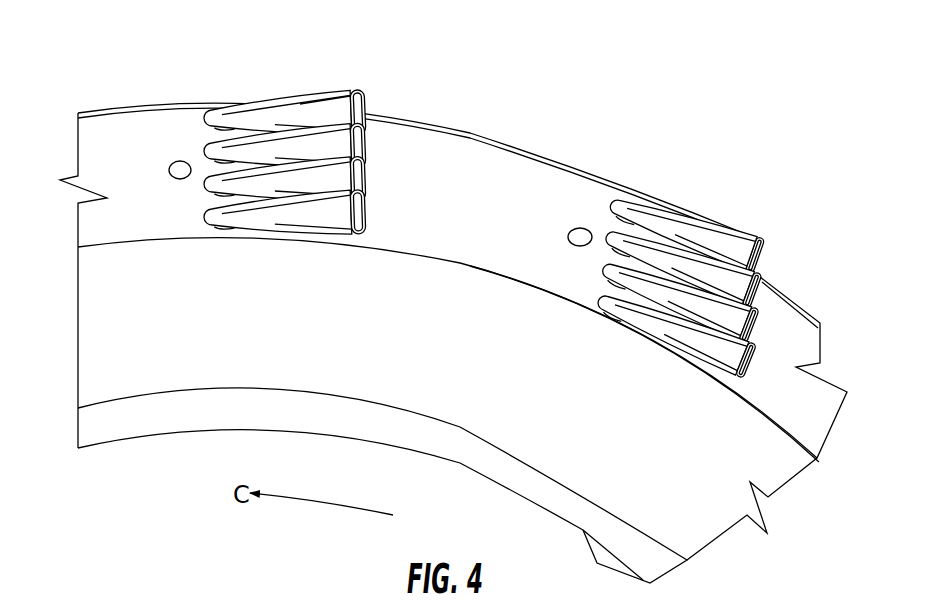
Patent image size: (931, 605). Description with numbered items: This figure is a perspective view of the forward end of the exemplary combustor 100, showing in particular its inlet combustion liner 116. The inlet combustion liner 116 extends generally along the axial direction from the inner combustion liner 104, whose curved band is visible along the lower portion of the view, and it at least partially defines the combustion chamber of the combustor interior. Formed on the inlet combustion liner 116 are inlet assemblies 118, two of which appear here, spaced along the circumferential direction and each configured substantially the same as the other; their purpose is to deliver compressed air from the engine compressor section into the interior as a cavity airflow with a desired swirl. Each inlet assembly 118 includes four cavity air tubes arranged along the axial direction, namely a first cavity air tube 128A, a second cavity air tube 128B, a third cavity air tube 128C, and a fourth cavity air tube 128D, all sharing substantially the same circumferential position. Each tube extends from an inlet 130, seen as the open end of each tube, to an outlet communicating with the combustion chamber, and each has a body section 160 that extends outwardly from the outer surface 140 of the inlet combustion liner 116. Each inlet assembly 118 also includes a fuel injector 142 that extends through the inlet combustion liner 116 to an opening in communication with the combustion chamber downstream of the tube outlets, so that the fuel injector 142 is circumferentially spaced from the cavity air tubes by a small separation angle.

The combustor 100 is at (537, 67).
The inner combustion liner 104 is at (480, 427).
The inlet combustion liner 116 is at (470, 133).
The inlet assembly 118 is at (488, 190).
The first cavity air tube 128A is at (336, 211).
The second cavity air tube 128B is at (342, 170).
The third cavity air tube 128C is at (345, 134).
The fourth cavity air tube 128D is at (335, 96).
The inlet 130 is at (372, 100).
The outer surface 140 is at (525, 187).
The fuel injector 142 is at (183, 157).
The body section 160 is at (307, 102).